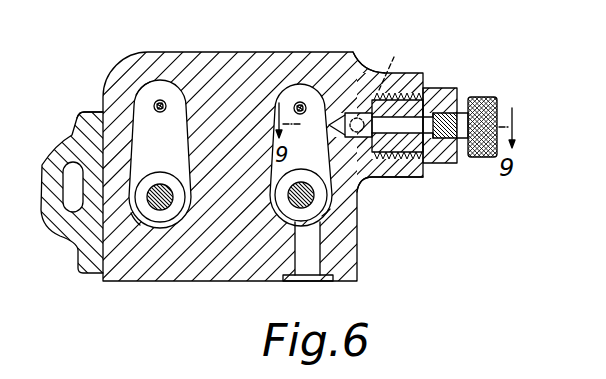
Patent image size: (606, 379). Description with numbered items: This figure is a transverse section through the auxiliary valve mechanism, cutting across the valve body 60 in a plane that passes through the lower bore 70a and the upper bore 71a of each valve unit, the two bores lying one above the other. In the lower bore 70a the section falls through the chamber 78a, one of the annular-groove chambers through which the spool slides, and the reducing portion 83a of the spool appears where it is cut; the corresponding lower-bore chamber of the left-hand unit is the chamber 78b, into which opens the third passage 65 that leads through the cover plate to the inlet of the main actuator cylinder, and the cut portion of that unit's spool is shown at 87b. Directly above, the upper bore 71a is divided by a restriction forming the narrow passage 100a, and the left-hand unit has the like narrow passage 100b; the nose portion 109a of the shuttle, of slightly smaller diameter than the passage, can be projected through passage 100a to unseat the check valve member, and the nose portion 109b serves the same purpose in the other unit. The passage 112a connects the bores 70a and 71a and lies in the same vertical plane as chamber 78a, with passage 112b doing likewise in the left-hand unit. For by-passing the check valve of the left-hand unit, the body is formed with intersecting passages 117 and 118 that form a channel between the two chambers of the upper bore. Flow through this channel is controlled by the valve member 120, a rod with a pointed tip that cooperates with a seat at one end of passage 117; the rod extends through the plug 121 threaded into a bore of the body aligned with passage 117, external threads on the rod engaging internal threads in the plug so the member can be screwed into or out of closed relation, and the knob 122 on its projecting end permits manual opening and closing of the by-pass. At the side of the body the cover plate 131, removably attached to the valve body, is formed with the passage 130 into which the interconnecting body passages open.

The valve body 60 is at (243, 64).
The third passage 65 is at (318, 270).
The bore 70a is at (163, 220).
The bore 71a is at (153, 88).
The chamber 78a is at (140, 217).
The chamber 78b is at (326, 211).
The reducing portion 83a is at (161, 184).
The pivot pin 87b is at (303, 182).
The narrow passage 100a is at (152, 106).
The narrow passage 100b is at (308, 85).
The nose portion 109a is at (163, 100).
The nose portion 109b is at (300, 102).
The passage 112a is at (133, 136).
The passage 112b is at (362, 190).
The passage 117 is at (364, 62).
The passage 118 is at (397, 57).
The valve member 120 is at (428, 138).
The plug 121 is at (445, 88).
The knob 122 is at (487, 100).
The passage 130 is at (69, 191).
The cover plate 131 is at (62, 221).